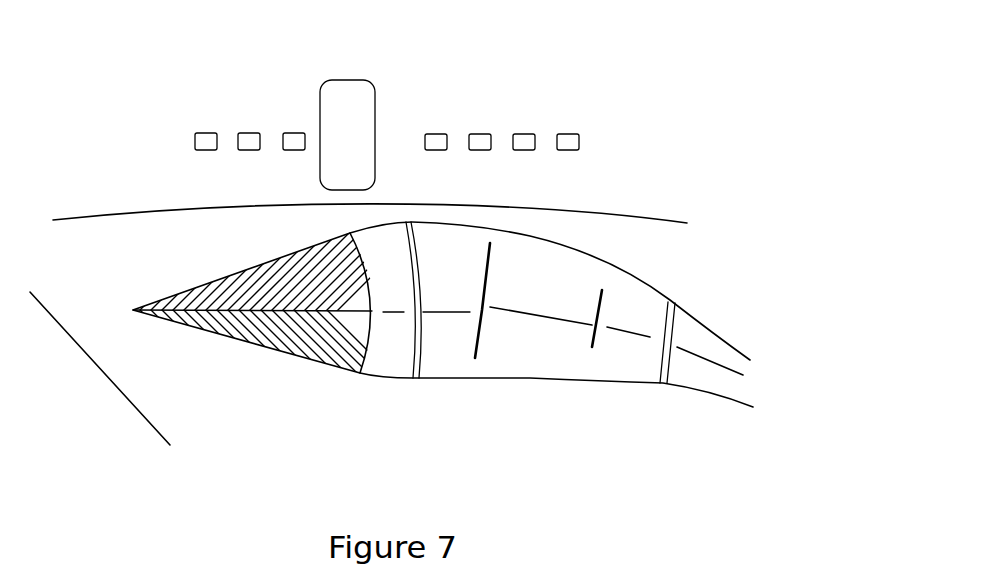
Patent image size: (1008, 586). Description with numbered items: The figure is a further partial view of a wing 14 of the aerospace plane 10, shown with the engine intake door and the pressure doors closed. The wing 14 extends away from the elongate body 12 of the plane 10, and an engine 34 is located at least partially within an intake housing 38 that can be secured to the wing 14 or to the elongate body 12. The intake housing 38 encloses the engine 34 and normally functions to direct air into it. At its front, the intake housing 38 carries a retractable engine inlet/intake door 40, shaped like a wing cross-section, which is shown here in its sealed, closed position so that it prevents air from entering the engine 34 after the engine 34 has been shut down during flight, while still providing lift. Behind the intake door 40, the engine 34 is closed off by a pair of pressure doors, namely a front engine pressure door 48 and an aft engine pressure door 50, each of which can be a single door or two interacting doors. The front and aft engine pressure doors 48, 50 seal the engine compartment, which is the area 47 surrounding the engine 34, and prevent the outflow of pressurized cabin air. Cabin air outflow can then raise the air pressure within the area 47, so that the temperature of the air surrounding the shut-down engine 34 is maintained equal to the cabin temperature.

The aerospace plane 10 is at (681, 70).
The elongate body 12 is at (455, 87).
The wing 14 is at (132, 370).
The engine 34 is at (530, 325).
The intake housing 38 is at (702, 335).
The retractable engine inlet/intake door 40 is at (263, 345).
The area surrounding the engine 47 is at (450, 348).
The front engine pressure door 48 is at (417, 344).
The aft engine pressure door 50 is at (660, 358).